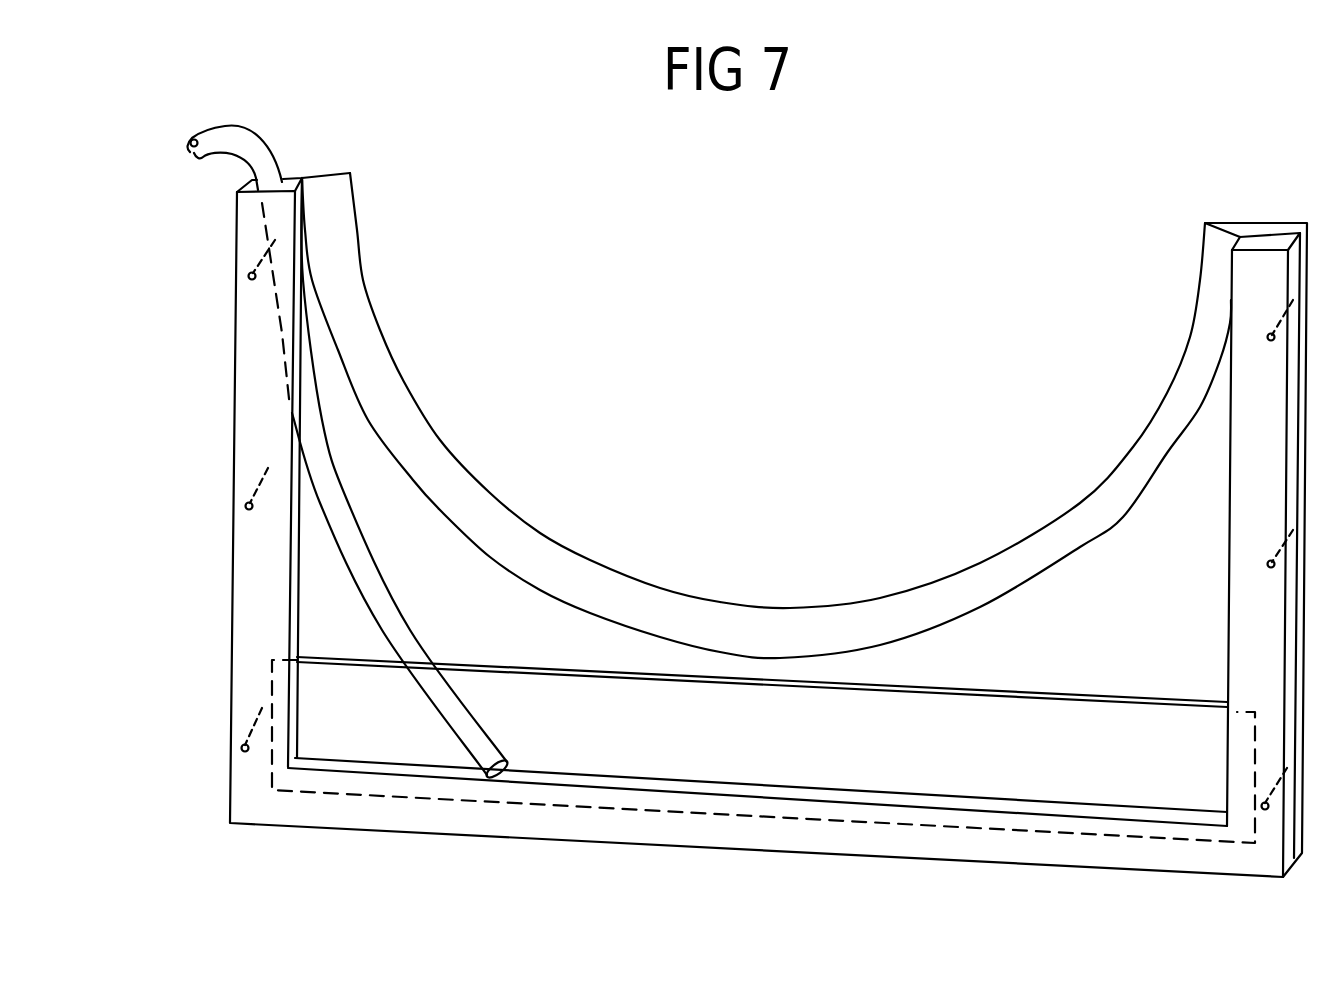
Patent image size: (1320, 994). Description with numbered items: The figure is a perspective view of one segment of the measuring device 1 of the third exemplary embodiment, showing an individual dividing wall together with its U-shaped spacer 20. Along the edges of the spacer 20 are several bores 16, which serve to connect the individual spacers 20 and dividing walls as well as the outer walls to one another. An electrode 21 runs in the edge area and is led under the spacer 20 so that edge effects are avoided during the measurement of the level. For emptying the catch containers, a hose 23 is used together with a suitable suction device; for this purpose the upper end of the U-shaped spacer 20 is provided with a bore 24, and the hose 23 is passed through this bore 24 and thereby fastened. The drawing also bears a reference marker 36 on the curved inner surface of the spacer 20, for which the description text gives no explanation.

The measuring device 1 is at (640, 345).
The bores 16 is at (262, 257).
The spacer 20 is at (1248, 635).
The electrode 21 is at (1000, 769).
The hose 23 is at (249, 138).
The bore 24 is at (276, 292).
The curved support surface 36 is at (778, 635).